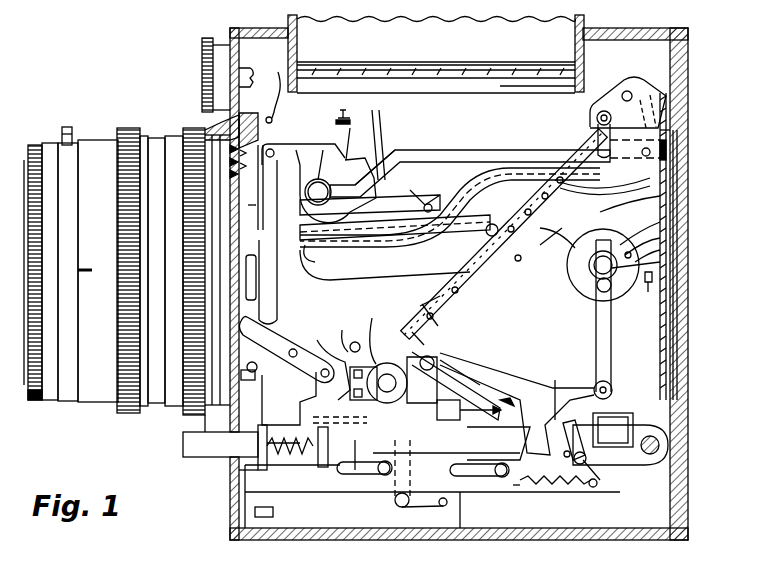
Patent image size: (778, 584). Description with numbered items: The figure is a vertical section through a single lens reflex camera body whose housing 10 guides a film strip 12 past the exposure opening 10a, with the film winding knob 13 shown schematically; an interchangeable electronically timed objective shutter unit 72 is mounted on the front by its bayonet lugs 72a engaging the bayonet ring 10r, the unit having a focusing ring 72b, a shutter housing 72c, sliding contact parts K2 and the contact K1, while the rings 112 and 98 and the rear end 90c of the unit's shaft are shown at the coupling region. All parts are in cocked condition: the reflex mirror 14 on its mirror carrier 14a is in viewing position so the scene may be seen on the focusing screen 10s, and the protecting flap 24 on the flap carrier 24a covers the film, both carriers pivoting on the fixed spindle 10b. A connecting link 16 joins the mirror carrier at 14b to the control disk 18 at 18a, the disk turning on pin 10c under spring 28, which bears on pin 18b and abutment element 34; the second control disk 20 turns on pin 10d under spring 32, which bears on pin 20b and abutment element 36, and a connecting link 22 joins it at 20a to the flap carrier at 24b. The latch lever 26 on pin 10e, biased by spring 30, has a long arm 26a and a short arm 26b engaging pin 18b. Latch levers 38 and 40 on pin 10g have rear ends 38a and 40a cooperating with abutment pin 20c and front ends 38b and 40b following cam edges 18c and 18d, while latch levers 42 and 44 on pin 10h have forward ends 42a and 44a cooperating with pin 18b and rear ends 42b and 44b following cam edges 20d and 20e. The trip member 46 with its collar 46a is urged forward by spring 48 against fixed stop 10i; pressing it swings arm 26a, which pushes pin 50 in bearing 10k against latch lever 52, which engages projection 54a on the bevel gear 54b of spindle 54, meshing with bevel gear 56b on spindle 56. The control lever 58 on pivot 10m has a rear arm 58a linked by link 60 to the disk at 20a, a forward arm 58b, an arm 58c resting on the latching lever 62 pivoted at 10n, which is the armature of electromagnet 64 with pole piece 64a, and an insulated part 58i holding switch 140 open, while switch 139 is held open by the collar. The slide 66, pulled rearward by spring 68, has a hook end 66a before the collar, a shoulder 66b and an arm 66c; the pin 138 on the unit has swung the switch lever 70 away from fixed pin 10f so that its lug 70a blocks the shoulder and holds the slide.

The housing 10 is at (682, 466).
The rectangular opening 10a is at (682, 380).
The fixed spindle 10b is at (629, 93).
The transverse pin 10c is at (296, 190).
The transverse pin 10d is at (590, 262).
The pin 10e is at (275, 150).
The fixed pin 10f is at (249, 364).
The pin 10g is at (492, 237).
The mounting pin 10h is at (440, 150).
The fixed stop 10i is at (320, 467).
The fixed bearing 10k is at (345, 380).
The pivot 10m is at (440, 360).
The pivot 10n is at (583, 462).
The bayonet ring 10r is at (215, 130).
The ground glass focusing screen 10s is at (403, 62).
The film strip 12 is at (678, 345).
The film winding knob 13 is at (202, 45).
The reflex mirror 14 is at (558, 167).
The mirror carrier 14a is at (605, 100).
The pivot 14b is at (672, 135).
The connecting link 16 is at (443, 150).
The control disk 18 is at (300, 200).
The pivot 18a is at (348, 178).
The pin 18b is at (322, 150).
The cam edge 18c is at (300, 172).
The cam edge 18d is at (376, 150).
The control disk 20 is at (622, 250).
The pivot 20a is at (597, 290).
The pin 20b is at (661, 240).
The abutment pin 20c is at (661, 222).
The cam edge 20d is at (662, 250).
The cam edge 20e is at (538, 254).
The connecting link 22 is at (600, 133).
The protecting flap 24 is at (667, 313).
The flap carrier 24a is at (655, 95).
The pivot 24b is at (592, 112).
The latch lever 26 is at (278, 275).
The long arm 26a is at (290, 455).
The short arm 26b is at (298, 150).
The spring 28 is at (344, 116).
The spring 30 is at (270, 88).
The spring 32 is at (662, 262).
The abutment element 34 is at (352, 128).
The abutment element 36 is at (655, 278).
The latch lever 38 is at (473, 300).
The rear end 38a is at (558, 234).
The front end 38b is at (312, 246).
The latch lever 40 is at (453, 315).
The rear arm 40a is at (665, 196).
The front end 40b is at (312, 265).
The latch lever 42 is at (472, 195).
The forward end 42a is at (382, 190).
The rear end 42b is at (640, 183).
The latch lever 44 is at (495, 63).
The forward end 44a is at (340, 255).
The rear end 44b is at (662, 150).
The trip member 46 is at (183, 445).
The collar 46a is at (248, 443).
The spring 48 is at (275, 470).
The pin 50 is at (290, 402).
The latch lever 52 is at (408, 508).
The spindle 54 is at (387, 363).
The projection 54a is at (425, 355).
The bevel gear 54b is at (365, 333).
The spindle 56 is at (328, 352).
The bevel gear 56b is at (341, 333).
The control lever 58 is at (528, 385).
The rear arm 58a is at (612, 383).
The forwardly extending arm 58b is at (410, 332).
The arm 58c is at (548, 490).
The insulated part 58i is at (505, 398).
The link 60 is at (611, 332).
The latching lever 62 is at (556, 380).
The electromagnet 64 is at (615, 412).
The pole piece 64a is at (568, 420).
The slide 66 is at (460, 495).
The hook-like forward end 66a is at (250, 470).
The arm 66b is at (372, 470).
The arm 66c is at (495, 430).
The spring 68 is at (518, 495).
The switch lever 70 is at (285, 345).
The lug 70a is at (360, 480).
The objective shutter unit 72 is at (100, 438).
The bayonet lugs 72a is at (212, 432).
The focusing ring 72b is at (104, 140).
The objective shutter housing 72c is at (83, 140).
The rear end of shaft 90c is at (182, 410).
The index knob 98 is at (66, 127).
The front ring 112 is at (32, 145).
The pin 138 is at (251, 300).
The switch 139 is at (255, 510).
The switch 140 is at (448, 398).
The contact K1 is at (250, 123).
The sliding contact parts K2 is at (228, 164).